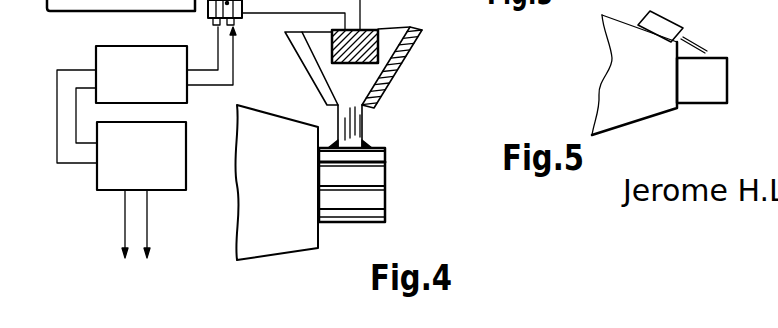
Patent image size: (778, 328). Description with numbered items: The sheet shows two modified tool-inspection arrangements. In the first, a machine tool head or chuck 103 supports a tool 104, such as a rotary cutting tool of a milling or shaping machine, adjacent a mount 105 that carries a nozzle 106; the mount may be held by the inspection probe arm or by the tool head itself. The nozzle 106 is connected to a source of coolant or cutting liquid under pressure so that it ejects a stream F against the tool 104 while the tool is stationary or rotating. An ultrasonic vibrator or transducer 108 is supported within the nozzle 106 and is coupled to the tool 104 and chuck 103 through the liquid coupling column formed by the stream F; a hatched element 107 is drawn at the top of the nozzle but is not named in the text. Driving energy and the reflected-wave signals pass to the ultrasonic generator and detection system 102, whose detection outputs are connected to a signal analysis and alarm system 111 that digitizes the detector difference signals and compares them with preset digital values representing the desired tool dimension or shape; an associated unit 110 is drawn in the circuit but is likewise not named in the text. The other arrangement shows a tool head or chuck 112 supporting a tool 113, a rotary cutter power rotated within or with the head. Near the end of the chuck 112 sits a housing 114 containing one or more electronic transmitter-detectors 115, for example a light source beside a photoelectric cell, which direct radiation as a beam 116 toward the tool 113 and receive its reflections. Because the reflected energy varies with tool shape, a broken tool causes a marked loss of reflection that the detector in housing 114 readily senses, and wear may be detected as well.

In FIG. 4, the ultrasonic generator and detection system 102 is at (154, 85).
In FIG. 4, the power supply / control unit 110 is at (100, 175).
In FIG. 4, the signal analysis and alarm system 111 is at (148, 212).
In FIG. 4, the machine tool head or chuck 103 is at (273, 244).
In FIG. 4, the tool 104 is at (372, 173).
In FIG. 4, the mount 105 is at (389, 85).
In FIG. 4, the nozzle 106 is at (413, 47).
In FIG. 4, the heating element 107 is at (383, 33).
In FIG. 4, the ultrasonic vibrator or transducer 108 is at (332, 48).
In FIG. 4, the stream of coupling fluid F is at (365, 127).
In FIG. 5, the tool head or chuck 112 is at (611, 60).
In FIG. 5, the tool 113 is at (690, 92).
In FIG. 5, the housing 114 is at (655, 22).
In FIG. 5, the electronic transmitter-detector 115 is at (682, 36).
In FIG. 5, the radiation beam 116 is at (705, 53).